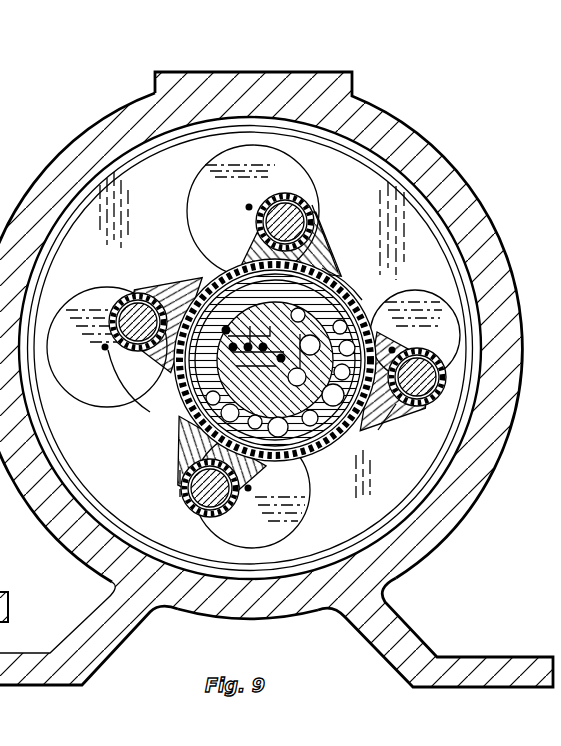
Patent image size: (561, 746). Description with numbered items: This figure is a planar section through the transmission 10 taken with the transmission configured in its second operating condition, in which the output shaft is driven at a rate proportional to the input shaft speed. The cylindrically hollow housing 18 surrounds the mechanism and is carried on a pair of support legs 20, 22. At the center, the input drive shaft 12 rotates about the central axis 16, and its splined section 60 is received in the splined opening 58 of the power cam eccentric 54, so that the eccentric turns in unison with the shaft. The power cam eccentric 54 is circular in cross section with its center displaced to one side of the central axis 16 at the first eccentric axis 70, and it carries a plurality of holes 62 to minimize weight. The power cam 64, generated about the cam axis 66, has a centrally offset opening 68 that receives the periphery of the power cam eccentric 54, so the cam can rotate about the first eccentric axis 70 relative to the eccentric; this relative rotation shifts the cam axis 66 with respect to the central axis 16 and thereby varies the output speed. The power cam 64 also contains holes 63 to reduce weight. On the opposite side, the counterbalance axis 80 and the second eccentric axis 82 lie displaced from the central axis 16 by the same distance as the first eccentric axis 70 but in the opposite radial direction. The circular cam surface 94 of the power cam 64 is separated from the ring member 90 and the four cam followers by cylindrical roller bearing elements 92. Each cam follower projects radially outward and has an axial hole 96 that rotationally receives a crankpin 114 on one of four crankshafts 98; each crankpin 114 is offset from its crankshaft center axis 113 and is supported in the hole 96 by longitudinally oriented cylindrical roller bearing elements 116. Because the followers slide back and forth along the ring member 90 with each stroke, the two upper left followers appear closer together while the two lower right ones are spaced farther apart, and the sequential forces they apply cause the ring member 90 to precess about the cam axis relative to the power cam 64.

The transmission 10 is at (276, 353).
The input drive shaft 12 is at (198, 302).
The central axis 16 is at (208, 290).
The housing 18 is at (400, 147).
The support leg 20 is at (132, 622).
The support leg 22 is at (380, 638).
The power cam eccentric 54 is at (194, 428).
The splined opening 58 is at (196, 446).
The splined section 60 is at (183, 407).
The holes 62 is at (393, 294).
The holes 63 is at (378, 440).
The power cam 64 is at (252, 232).
The cam axis 66 is at (258, 478).
The centrally offset opening 68 is at (324, 262).
The first eccentric axis 70 is at (187, 236).
The counterbalance axis 80 is at (194, 286).
The second eccentric axis 82 is at (104, 401).
The ring member 90 is at (320, 457).
The cylindrical roller bearing elements 92 is at (347, 417).
The circular cam surface 94 is at (337, 277).
The axial hole 96 is at (312, 198).
The crankshaft 98 is at (295, 173).
The center axis 113 is at (249, 208).
The crankpin 114 is at (282, 226).
The cylindrical roller bearing elements 116 is at (296, 186).